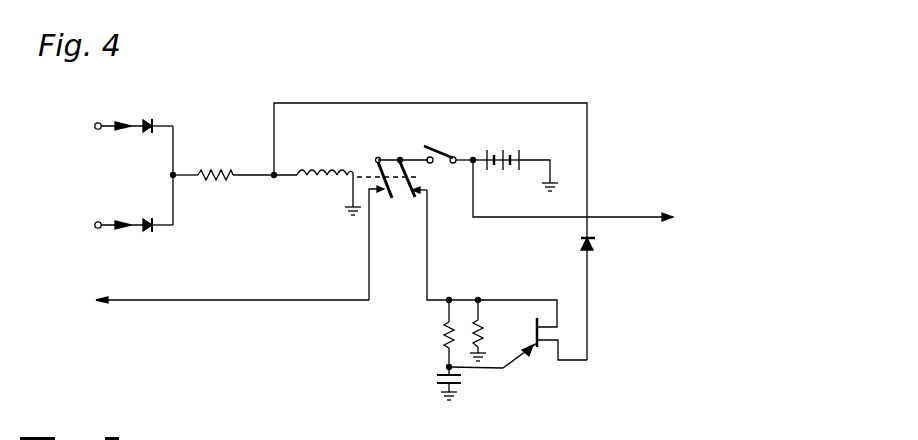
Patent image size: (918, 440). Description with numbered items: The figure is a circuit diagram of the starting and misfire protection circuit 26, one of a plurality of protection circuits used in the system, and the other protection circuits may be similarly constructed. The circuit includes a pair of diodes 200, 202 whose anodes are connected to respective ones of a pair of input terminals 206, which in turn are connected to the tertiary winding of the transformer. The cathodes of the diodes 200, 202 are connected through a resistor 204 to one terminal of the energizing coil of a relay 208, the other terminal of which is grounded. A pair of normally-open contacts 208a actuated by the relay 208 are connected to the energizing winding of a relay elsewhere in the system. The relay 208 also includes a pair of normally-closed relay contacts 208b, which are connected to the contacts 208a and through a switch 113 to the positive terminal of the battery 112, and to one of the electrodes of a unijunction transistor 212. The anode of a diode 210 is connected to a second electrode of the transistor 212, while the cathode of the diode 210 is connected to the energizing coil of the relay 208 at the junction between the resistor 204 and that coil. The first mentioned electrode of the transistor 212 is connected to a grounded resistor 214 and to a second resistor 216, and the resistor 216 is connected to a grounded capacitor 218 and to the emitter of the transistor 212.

The starting and misfire protection circuit 26 is at (393, 216).
The diode 200 is at (153, 120).
The diode 202 is at (150, 231).
The resistor 204 is at (210, 185).
The input terminals 206 is at (99, 122).
The relay 208 is at (340, 165).
The normally-open relay contacts 208a is at (380, 199).
The normally-closed relay contacts 208b is at (418, 184).
The switch 113 is at (441, 149).
The battery 112 is at (534, 138).
The diode 210 is at (594, 246).
The unijunction transistor 212 is at (520, 362).
The grounded resistor 214 is at (480, 327).
The second resistor 216 is at (444, 340).
The grounded capacitor 218 is at (437, 389).